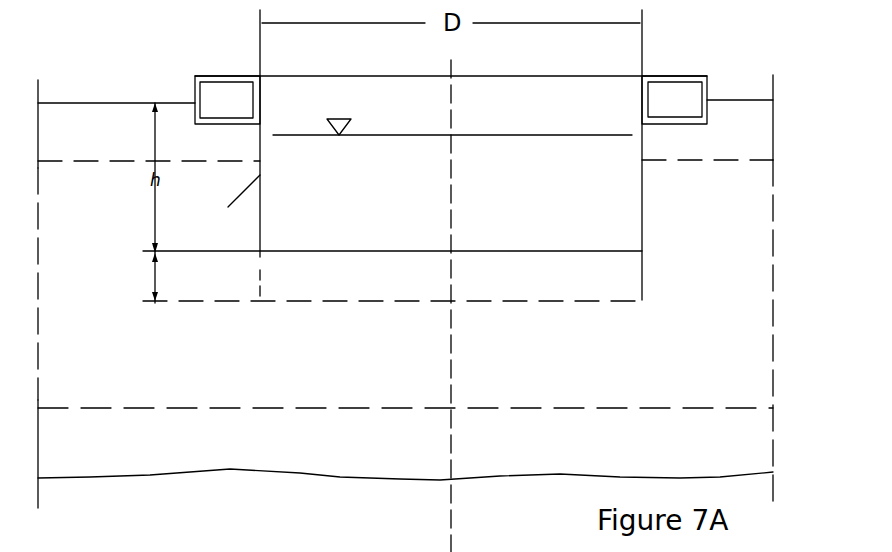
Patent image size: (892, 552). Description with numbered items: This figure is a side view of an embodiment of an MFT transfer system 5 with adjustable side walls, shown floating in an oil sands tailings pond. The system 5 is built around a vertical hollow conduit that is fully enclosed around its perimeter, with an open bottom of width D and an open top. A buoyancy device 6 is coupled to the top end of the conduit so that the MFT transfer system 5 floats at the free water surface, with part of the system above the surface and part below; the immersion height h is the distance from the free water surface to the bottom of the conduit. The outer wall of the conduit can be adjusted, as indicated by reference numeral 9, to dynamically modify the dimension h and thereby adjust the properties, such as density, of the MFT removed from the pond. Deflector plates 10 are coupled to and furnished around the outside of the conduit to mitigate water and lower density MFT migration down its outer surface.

The buoyancy device 6 is at (487, 65).
The deflector plates 10 is at (645, 179).
The MFT transfer system 5 is at (447, 248).
The adjustable outer wall 9 is at (447, 310).